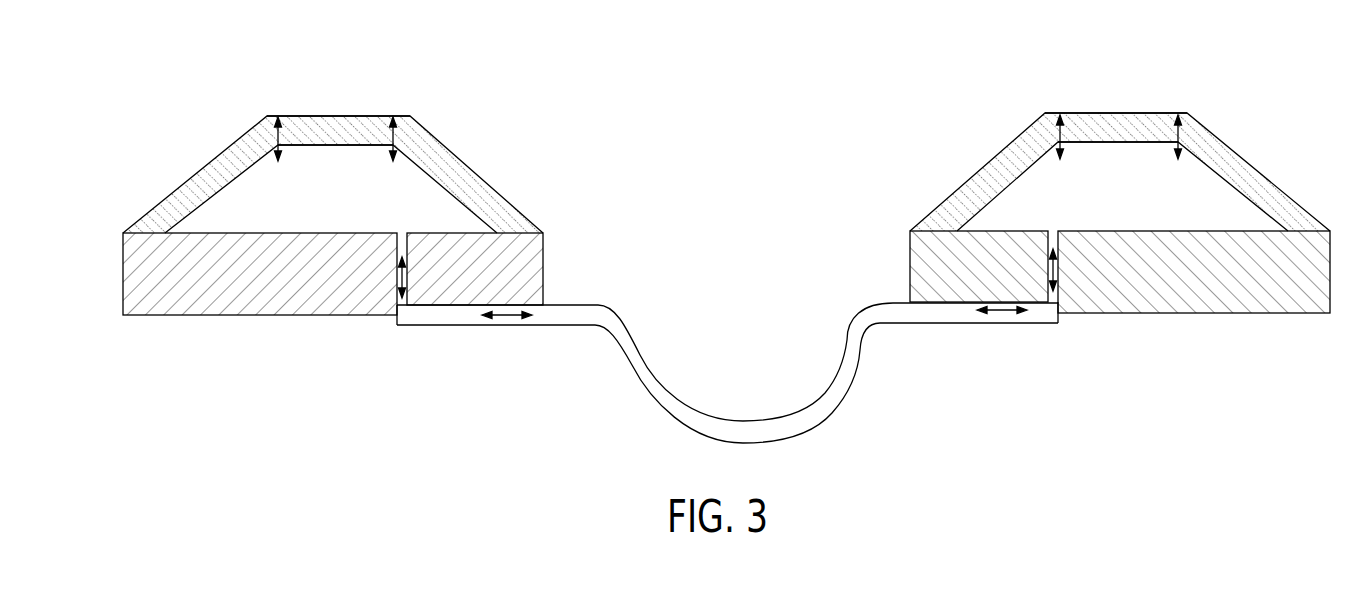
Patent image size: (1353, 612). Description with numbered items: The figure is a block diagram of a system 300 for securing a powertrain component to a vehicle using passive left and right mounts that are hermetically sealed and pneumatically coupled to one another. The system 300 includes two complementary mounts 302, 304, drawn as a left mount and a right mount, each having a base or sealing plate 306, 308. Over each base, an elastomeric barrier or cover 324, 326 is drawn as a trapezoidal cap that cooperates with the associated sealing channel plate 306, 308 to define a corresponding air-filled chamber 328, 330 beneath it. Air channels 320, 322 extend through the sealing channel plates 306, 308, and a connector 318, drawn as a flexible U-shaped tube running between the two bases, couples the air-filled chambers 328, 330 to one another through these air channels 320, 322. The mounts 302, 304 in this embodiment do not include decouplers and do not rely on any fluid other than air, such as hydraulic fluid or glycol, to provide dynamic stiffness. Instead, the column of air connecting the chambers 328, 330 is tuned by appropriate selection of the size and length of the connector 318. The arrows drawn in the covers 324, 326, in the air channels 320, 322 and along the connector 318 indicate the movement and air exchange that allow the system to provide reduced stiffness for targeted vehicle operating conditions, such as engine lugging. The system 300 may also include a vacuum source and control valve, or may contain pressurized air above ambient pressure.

The system 300 is at (755, 77).
The mount 302 is at (514, 154).
The mount 304 is at (963, 133).
The sealing channel plate 306 is at (543, 265).
The sealing channel plate 308 is at (910, 250).
The connector 318 is at (731, 410).
The air channel 320 is at (402, 308).
The air channel 322 is at (1053, 302).
The elastomeric cover 324 is at (360, 120).
The elastomeric cover 326 is at (1183, 124).
The air-filled chamber 328 is at (320, 162).
The air-filled chamber 330 is at (1107, 159).